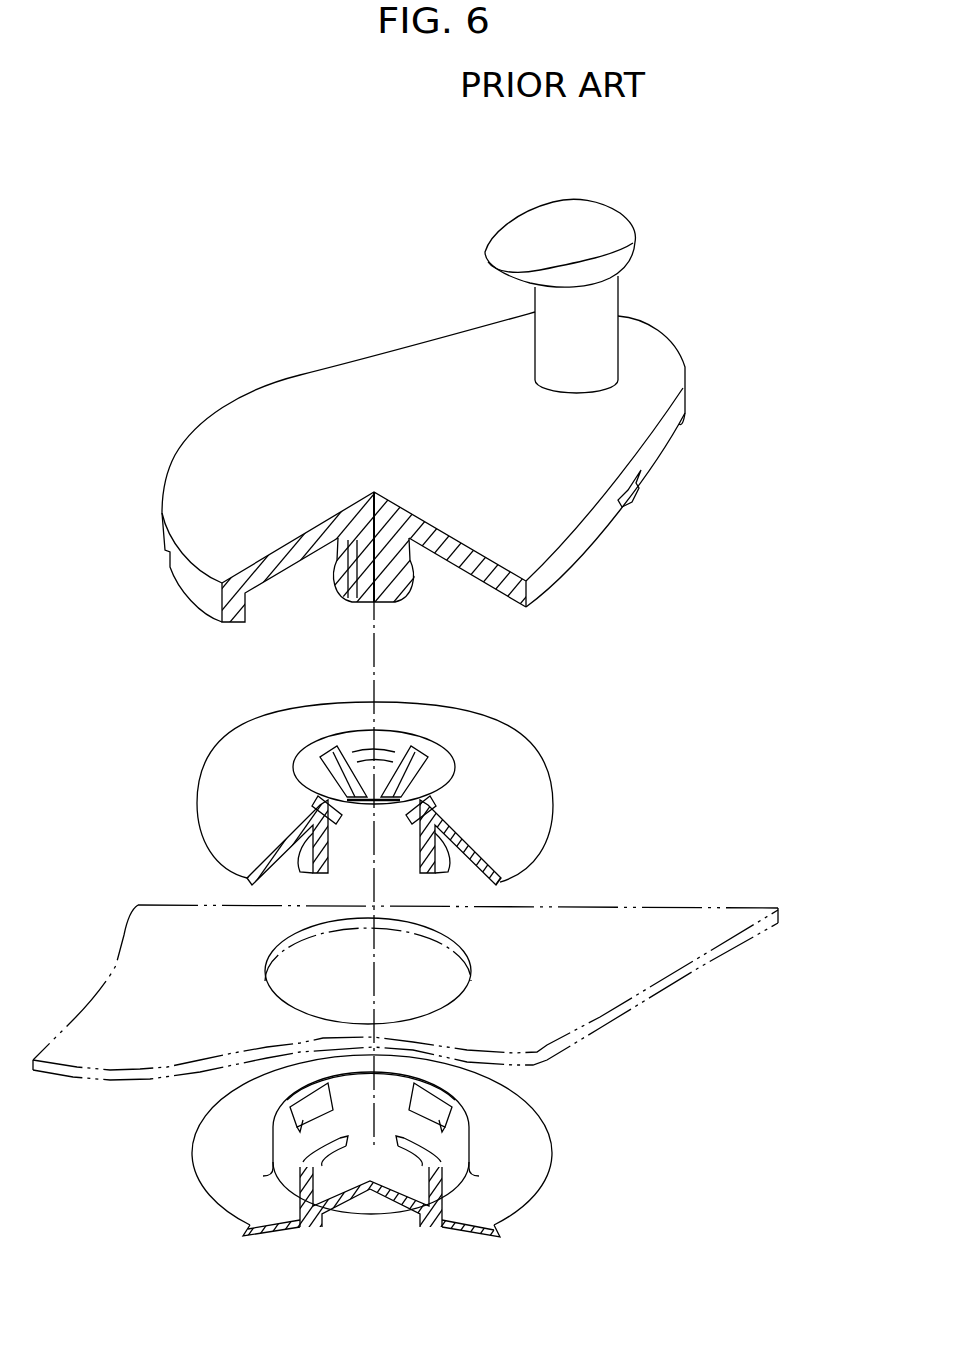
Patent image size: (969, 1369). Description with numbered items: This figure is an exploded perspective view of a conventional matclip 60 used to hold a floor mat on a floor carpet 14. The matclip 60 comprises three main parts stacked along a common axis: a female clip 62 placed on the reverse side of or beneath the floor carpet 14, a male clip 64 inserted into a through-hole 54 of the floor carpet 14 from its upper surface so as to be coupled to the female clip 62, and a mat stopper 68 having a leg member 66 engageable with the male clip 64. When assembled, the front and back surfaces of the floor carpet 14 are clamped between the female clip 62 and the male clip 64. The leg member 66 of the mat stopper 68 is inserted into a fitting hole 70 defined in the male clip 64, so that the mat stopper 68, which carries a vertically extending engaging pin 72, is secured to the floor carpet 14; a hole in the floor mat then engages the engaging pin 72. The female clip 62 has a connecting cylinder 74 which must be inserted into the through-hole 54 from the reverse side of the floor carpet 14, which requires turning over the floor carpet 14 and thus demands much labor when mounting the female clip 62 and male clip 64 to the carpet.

The engaging pin 72 is at (495, 246).
The mat stopper 68 is at (585, 557).
The leg member 66 is at (409, 597).
The male clip 64 is at (533, 770).
The fitting hole 70 is at (450, 818).
The through-hole 54 is at (462, 995).
The floor carpet 14 is at (710, 968).
The connecting cylinder 74 is at (462, 1156).
The female clip 62 is at (523, 1203).
The matclip 60 is at (811, 211).